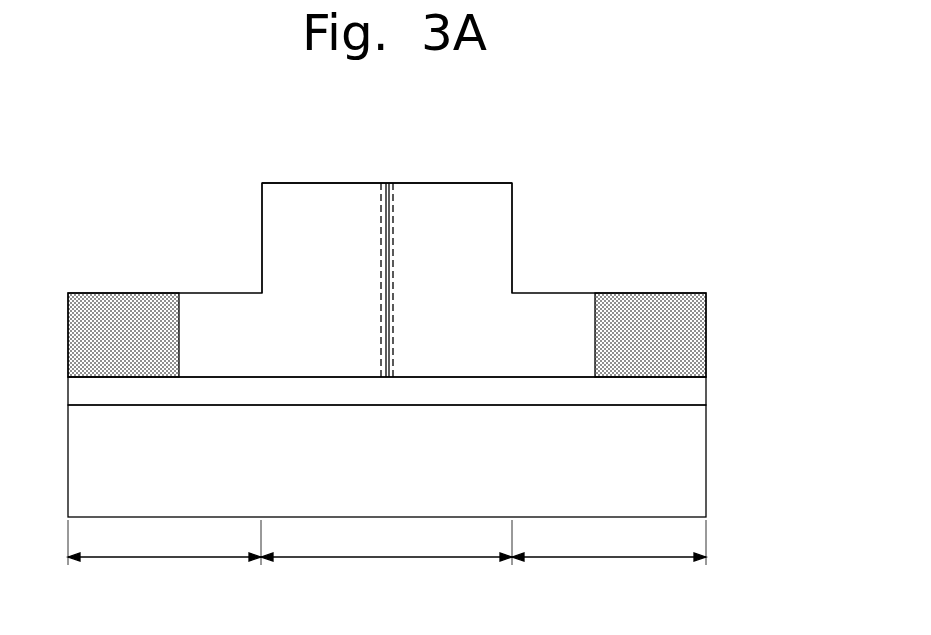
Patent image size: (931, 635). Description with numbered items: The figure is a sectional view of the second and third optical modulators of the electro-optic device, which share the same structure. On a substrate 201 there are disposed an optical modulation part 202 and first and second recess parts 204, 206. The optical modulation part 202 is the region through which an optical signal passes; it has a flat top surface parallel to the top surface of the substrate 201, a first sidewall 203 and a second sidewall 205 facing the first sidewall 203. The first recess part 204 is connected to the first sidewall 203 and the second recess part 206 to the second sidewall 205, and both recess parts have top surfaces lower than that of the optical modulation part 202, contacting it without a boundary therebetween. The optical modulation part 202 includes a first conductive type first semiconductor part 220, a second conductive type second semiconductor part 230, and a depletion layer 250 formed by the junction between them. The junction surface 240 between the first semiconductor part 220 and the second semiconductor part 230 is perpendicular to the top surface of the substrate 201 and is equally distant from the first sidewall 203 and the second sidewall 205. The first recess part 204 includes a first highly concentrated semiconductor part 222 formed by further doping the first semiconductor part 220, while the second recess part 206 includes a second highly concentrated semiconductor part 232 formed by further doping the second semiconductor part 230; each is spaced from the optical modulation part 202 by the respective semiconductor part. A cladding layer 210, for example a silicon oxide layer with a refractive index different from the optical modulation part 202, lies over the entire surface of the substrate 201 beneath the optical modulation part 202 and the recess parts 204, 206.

The substrate 201 is at (693, 461).
The cladding layer 210 is at (693, 390).
The first semiconductor part 220 is at (292, 193).
The first highly concentrated semiconductor part 222 is at (117, 293).
The second highly concentrated semiconductor part 232 is at (694, 330).
The first sidewall 203 is at (262, 205).
The second sidewall 205 is at (513, 237).
The second semiconductor part 230 is at (474, 194).
The junction surface 240 is at (386, 282).
The depletion layer 250 is at (393, 181).
The first recess part 204 is at (164, 552).
The optical modulation part 202 is at (386, 552).
The second recess part 206 is at (609, 552).